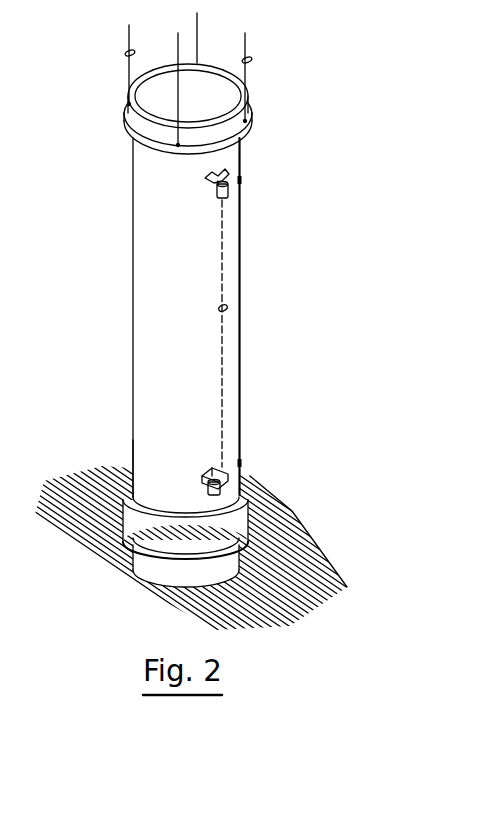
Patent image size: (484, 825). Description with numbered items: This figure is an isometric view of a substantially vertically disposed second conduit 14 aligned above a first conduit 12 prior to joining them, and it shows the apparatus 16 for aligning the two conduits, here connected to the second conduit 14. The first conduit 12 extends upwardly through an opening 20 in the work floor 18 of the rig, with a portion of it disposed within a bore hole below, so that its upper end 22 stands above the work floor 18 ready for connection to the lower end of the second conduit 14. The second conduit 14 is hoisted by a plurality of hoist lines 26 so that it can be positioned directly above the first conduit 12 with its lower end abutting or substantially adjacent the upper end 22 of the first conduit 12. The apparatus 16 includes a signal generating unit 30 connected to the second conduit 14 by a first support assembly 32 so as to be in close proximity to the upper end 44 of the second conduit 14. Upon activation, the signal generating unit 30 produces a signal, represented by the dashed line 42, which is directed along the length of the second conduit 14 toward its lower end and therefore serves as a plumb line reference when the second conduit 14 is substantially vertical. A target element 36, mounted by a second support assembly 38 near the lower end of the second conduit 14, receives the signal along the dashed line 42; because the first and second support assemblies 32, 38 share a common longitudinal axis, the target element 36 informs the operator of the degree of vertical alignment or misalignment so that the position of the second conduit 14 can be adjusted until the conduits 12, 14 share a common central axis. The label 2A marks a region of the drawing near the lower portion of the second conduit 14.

The first conduit 12 is at (150, 566).
The second conduit 14 is at (237, 272).
The apparatus 16 is at (240, 180).
The work floor 18 is at (300, 558).
The opening 20 is at (246, 543).
The upper end 22 is at (232, 517).
The hoist lines 26 is at (125, 54).
The signal generating unit 30 is at (216, 199).
The first support assembly 32 is at (229, 166).
The target element 36 is at (226, 483).
The second support assembly 38 is at (200, 470).
The dashed line 42 is at (228, 307).
The upper end 44 is at (148, 164).
The section region 2A is at (143, 468).